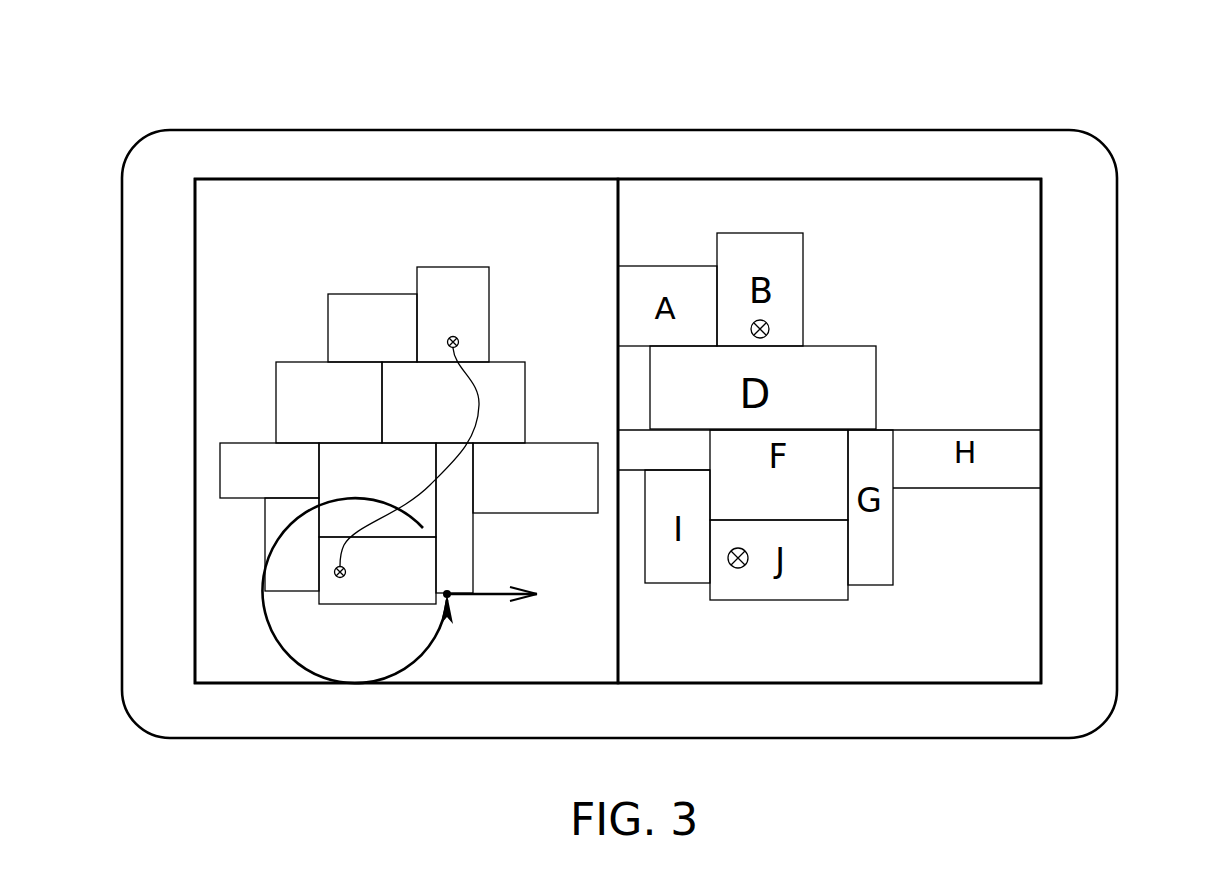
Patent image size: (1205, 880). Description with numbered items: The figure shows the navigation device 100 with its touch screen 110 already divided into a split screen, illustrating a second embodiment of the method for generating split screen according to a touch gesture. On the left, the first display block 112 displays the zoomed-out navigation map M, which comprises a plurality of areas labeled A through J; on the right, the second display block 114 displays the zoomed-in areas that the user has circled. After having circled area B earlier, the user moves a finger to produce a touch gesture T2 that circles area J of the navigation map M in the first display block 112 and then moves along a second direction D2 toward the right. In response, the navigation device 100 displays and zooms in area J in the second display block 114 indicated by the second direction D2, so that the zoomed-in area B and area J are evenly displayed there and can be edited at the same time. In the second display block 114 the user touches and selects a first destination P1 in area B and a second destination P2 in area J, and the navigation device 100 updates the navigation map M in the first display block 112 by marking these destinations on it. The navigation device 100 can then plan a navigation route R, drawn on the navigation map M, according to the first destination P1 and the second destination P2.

The navigation device 100 is at (1064, 100).
The touch screen 110 is at (1045, 362).
The first display block 112 is at (427, 179).
The second display block 114 is at (764, 179).
The navigation map M is at (290, 341).
The navigation route R is at (480, 397).
The first destination P1 is at (770, 329).
The second destination P2 is at (735, 568).
The second direction D2 is at (490, 587).
The touch gesture T2 is at (442, 638).